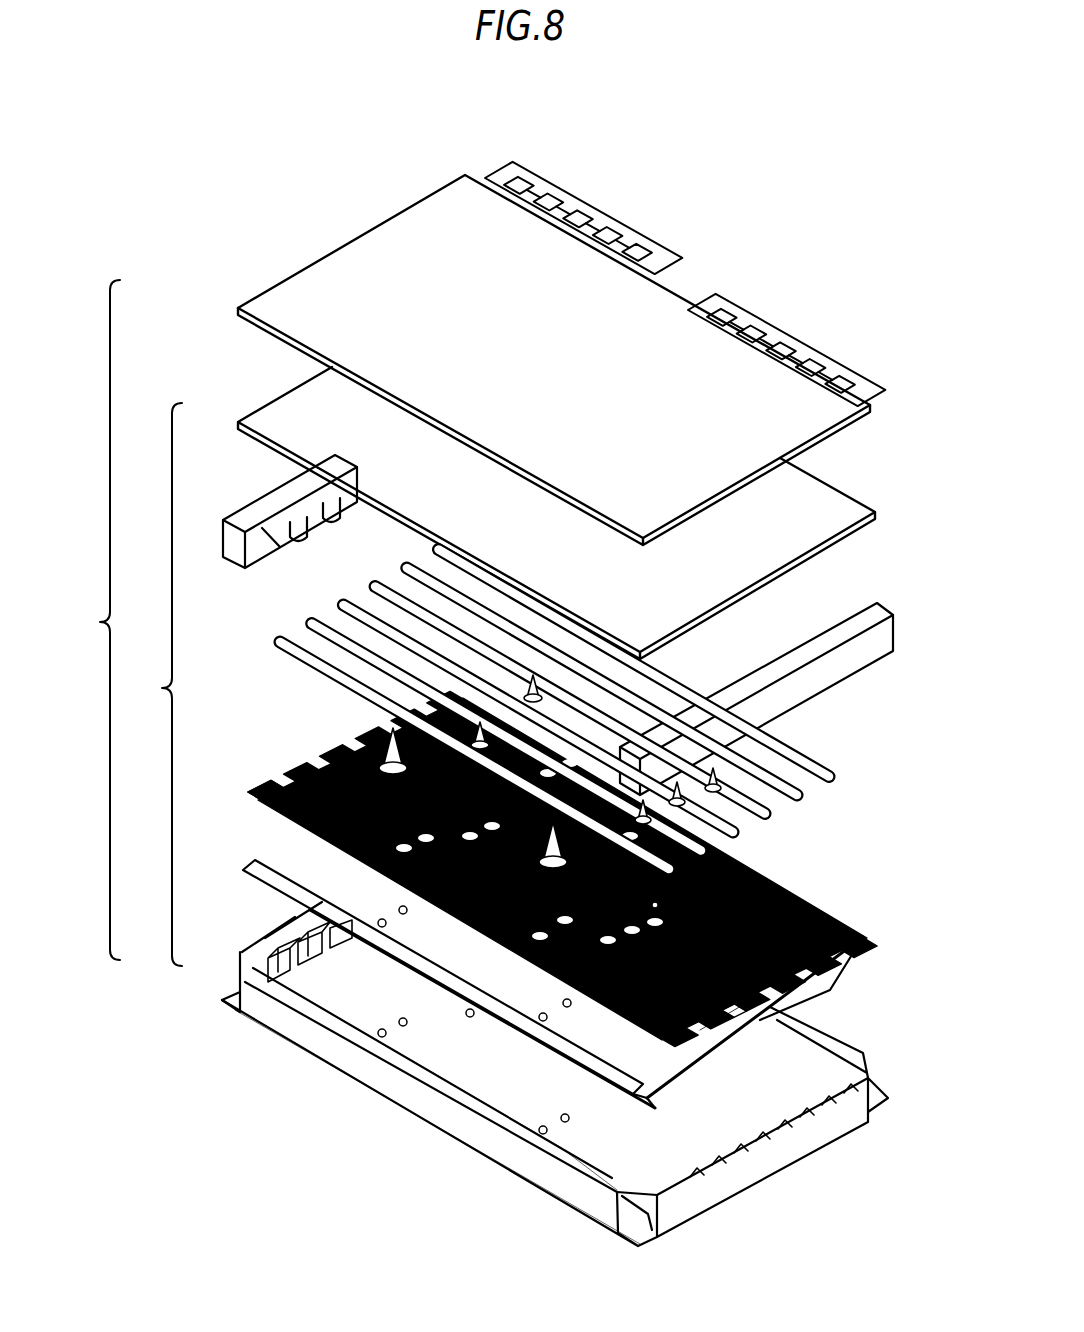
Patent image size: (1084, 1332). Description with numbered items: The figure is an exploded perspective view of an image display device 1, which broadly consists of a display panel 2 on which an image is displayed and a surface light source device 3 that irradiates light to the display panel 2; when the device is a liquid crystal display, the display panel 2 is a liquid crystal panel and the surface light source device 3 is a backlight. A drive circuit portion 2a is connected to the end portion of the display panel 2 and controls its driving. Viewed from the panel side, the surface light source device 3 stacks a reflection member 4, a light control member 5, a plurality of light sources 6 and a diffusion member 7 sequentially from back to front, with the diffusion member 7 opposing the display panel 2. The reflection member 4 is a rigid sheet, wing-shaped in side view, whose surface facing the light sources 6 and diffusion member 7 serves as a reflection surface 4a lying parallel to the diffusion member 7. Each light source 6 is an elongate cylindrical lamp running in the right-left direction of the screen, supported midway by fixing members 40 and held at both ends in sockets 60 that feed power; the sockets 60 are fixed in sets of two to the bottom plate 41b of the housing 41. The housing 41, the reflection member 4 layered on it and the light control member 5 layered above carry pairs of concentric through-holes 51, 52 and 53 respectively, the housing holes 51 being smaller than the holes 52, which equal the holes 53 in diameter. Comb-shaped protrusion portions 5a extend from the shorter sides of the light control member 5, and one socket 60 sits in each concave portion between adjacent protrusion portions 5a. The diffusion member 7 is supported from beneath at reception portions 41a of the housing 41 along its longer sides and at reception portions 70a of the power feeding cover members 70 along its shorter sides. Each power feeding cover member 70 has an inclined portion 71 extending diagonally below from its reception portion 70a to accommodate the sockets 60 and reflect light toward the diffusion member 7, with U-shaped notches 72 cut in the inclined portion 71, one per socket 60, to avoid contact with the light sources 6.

The image display device 1 is at (94, 636).
The display panel 2 is at (376, 178).
The drive circuit portion 2a is at (822, 312).
The surface light source device 3 is at (148, 702).
The reflection member 4 is at (570, 1026).
The reflection surface 4a is at (710, 1030).
The light control member 5 is at (561, 876).
The comb-shaped protrusion portions 5a is at (330, 780).
The light sources 6 is at (800, 768).
The diffusion member 7 is at (836, 540).
The fixing members 40 is at (380, 738).
The housing 41 is at (560, 1083).
The reception portions 41a is at (590, 1172).
The bottom plate 41b is at (500, 1090).
The through-holes 51 is at (387, 1034).
The through-holes 52 is at (548, 1018).
The through-holes 53 is at (680, 910).
The sockets 60 is at (285, 975).
The power feeding cover members 70 is at (576, 621).
The reception portions 70a is at (262, 510).
The inclined portion 71 is at (337, 530).
The U-shaped notches 72 is at (306, 556).